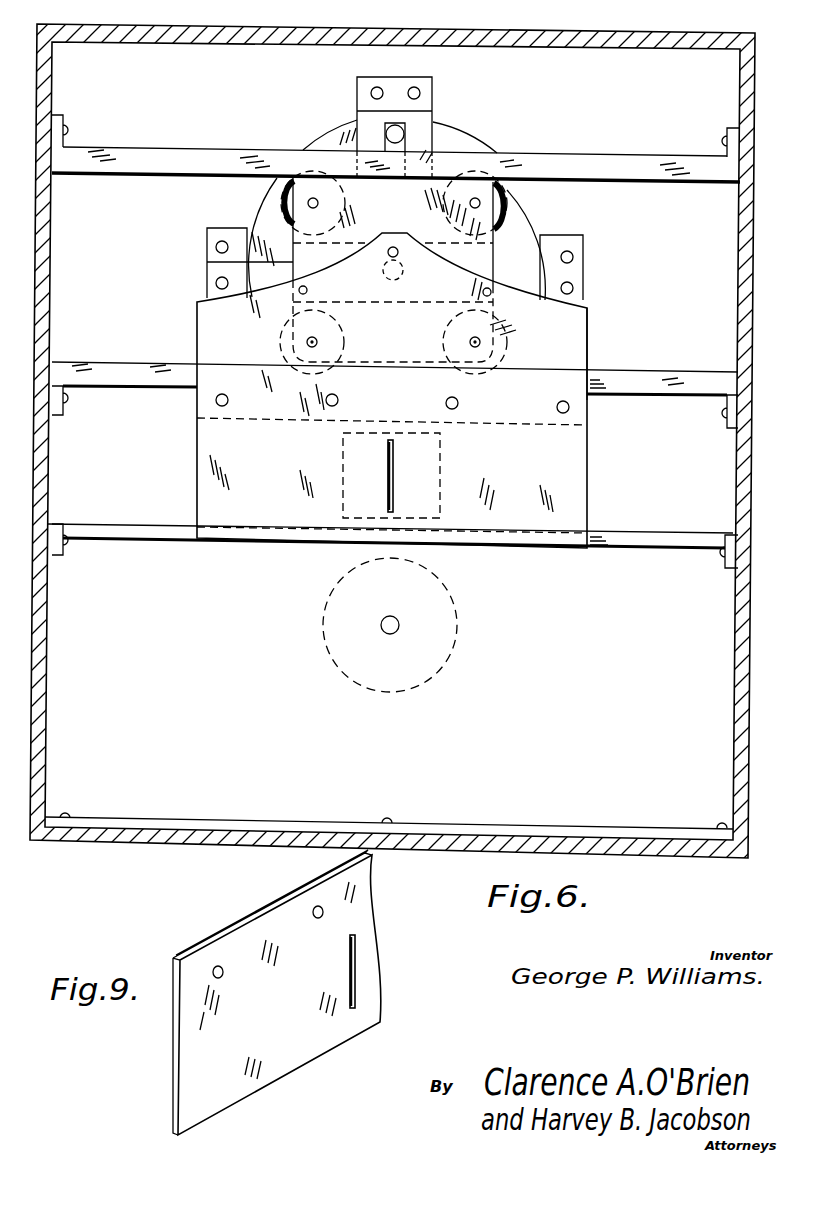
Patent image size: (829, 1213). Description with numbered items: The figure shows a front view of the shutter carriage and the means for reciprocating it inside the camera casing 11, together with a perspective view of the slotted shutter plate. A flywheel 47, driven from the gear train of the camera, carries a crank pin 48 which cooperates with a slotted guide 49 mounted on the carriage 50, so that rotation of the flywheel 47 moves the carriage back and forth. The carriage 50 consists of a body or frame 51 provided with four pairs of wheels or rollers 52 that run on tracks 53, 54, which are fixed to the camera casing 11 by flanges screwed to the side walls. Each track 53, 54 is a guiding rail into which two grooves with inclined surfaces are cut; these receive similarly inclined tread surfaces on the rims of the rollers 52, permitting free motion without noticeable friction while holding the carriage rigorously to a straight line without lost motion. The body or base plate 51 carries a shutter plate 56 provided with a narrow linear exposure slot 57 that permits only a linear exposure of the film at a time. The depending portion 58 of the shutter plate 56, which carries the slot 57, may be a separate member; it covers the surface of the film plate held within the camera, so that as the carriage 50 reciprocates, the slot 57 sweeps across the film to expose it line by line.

In FIG. 6, the casing 11 is at (430, 31).
In FIG. 6, the flywheel 47 is at (472, 147).
In FIG. 6, the crank pin 48 is at (402, 130).
In FIG. 6, the slotted guide 49 is at (365, 120).
In FIG. 6, the carriage 50 is at (296, 235).
In FIG. 6, the body or frame 51 is at (207, 262).
In FIG. 6, the wheels or rollers 52 is at (282, 201).
In FIG. 6, the track 53 is at (135, 153).
In FIG. 6, the track 54 is at (131, 365).
In FIG. 6, the shutter plate 56 is at (588, 336).
In FIG. 6, the linear exposure slot 57 is at (390, 458).
In FIG. 9, the linear exposure slot 57 is at (356, 964).
In FIG. 6, the depending portion 58 is at (577, 448).
In FIG. 9, the depending portion 58 is at (290, 1062).